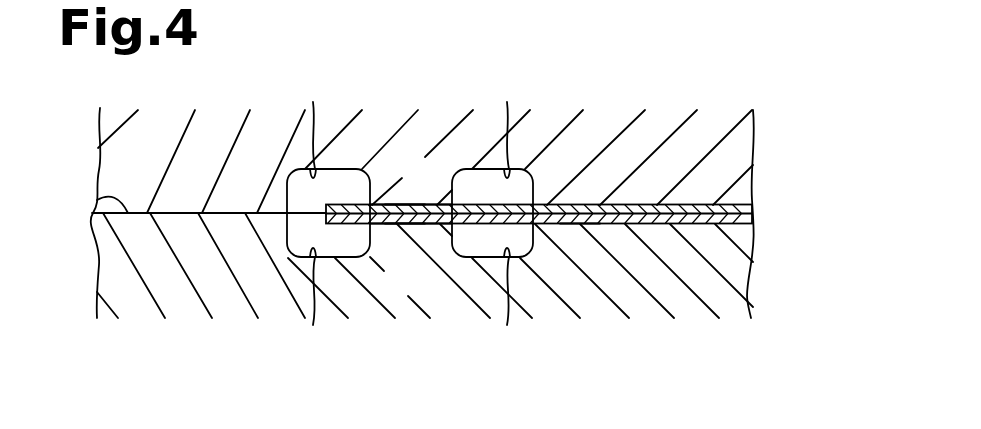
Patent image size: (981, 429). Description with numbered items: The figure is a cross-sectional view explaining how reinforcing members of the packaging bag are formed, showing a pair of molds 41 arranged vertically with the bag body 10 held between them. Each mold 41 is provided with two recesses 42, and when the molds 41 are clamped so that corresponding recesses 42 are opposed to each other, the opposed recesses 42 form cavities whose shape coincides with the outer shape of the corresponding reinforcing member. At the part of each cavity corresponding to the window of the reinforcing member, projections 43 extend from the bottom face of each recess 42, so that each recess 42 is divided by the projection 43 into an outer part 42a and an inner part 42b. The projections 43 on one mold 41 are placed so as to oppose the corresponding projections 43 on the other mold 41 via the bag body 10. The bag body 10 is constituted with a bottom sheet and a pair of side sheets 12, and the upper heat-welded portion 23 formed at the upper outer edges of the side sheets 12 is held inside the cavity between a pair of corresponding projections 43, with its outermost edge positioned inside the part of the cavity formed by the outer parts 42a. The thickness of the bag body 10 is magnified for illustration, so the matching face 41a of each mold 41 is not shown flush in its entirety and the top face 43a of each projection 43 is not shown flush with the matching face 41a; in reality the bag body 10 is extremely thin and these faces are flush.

The bag body 10 is at (797, 176).
The side sheets 12 is at (743, 209).
The upper heat-welded portions 23 is at (577, 226).
The molds 41 is at (127, 136).
The matching face 41a is at (108, 192).
The recesses 42 is at (537, 73).
The outer part 42a is at (328, 216).
The inner part 42b is at (493, 216).
The projections 43 is at (371, 203).
The top face 43a is at (404, 204).